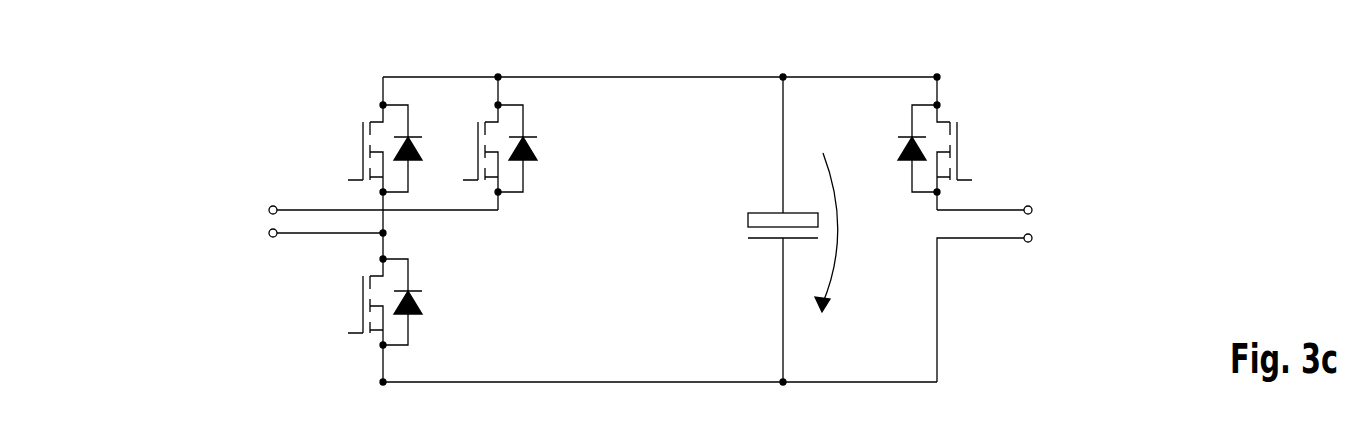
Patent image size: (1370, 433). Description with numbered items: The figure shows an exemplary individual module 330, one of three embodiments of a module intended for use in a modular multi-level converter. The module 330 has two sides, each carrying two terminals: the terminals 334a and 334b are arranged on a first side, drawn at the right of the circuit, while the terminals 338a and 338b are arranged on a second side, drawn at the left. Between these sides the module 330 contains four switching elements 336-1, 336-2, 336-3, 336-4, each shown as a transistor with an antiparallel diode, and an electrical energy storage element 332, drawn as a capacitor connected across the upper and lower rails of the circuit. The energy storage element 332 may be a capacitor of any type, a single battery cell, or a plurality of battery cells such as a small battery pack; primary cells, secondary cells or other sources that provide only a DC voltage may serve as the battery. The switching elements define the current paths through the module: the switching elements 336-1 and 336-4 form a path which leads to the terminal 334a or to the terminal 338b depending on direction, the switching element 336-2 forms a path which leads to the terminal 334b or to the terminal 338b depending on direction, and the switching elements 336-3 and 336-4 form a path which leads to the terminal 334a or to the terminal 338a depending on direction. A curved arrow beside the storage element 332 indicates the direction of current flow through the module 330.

The individual module 330 is at (1115, 90).
The electrical energy storage element 332 is at (750, 240).
The terminal 334a is at (1032, 207).
The terminal 334b is at (1032, 241).
The switching element 336-1 is at (362, 132).
The switching element 336-2 is at (363, 305).
The switching element 336-3 is at (477, 147).
The switching element 336-4 is at (958, 152).
The terminal 338a is at (268, 208).
The terminal 338b is at (268, 235).